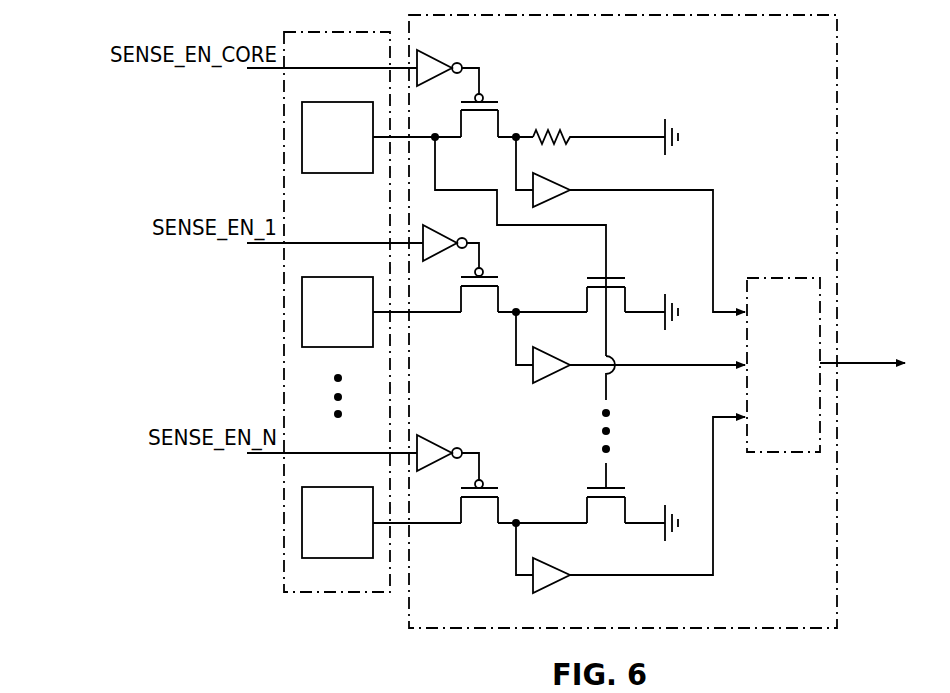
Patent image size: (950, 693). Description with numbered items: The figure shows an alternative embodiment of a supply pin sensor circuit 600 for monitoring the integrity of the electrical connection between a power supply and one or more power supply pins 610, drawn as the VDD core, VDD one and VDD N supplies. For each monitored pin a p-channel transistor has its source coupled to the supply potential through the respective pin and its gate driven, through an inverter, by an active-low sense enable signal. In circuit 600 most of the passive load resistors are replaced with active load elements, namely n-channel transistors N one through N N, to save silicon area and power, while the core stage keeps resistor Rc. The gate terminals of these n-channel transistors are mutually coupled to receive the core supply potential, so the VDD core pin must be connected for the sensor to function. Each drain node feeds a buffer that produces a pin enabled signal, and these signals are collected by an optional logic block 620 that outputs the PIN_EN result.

The supply pin sensor circuit 600 is at (820, 618).
The power supply pins 610 is at (338, 596).
The optional logic block 620 is at (802, 274).